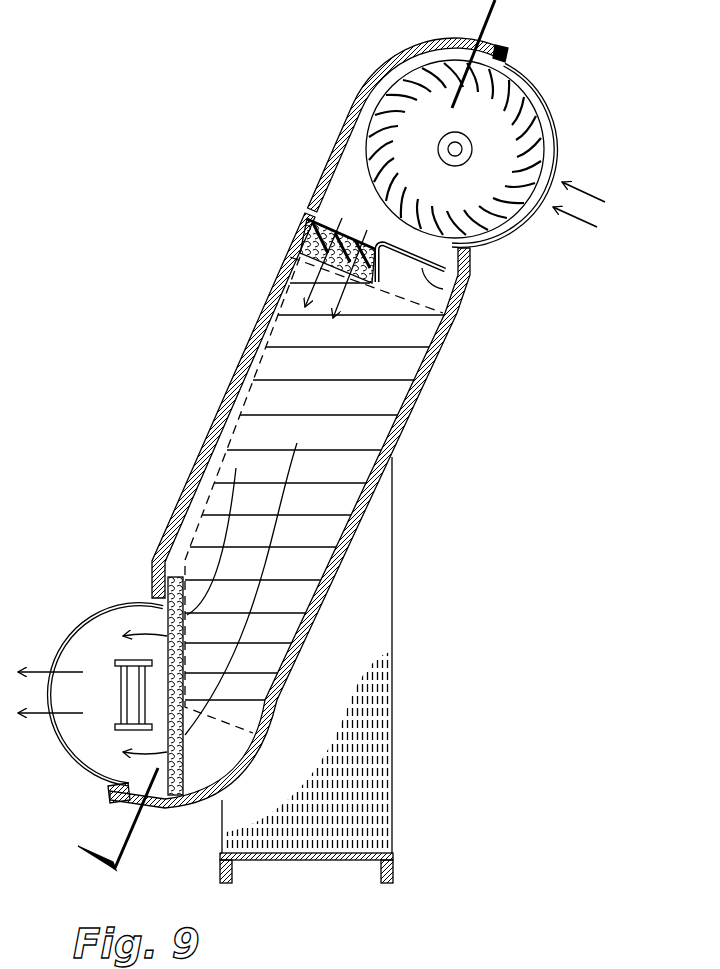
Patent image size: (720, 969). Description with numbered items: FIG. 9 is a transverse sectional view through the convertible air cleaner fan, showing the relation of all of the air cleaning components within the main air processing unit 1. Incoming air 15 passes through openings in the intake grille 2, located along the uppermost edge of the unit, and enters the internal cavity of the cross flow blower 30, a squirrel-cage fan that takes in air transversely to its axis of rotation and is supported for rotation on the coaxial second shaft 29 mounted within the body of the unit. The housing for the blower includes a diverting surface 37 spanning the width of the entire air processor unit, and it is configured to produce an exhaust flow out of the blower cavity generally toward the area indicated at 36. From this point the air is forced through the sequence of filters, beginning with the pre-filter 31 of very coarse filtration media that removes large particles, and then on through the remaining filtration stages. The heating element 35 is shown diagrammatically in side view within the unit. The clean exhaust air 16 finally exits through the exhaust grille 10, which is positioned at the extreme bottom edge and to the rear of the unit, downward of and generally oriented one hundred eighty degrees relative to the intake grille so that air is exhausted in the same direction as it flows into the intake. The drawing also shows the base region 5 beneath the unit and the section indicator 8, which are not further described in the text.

The main air processing unit 1 is at (428, 378).
The intake grille 2 is at (553, 150).
The drip pan 5 is at (368, 853).
The section line 8 is at (118, 830).
The exhaust grille 10 is at (119, 602).
The incoming air 15 is at (590, 212).
The clean exhaust air 16 is at (50, 676).
The second shaft 29 is at (457, 158).
The cross flow blower 30 is at (515, 100).
The pre-filter 31 is at (303, 225).
The heating element 35 is at (110, 730).
The exhaust flow area 36 is at (348, 187).
The diverting surface 37 is at (463, 298).